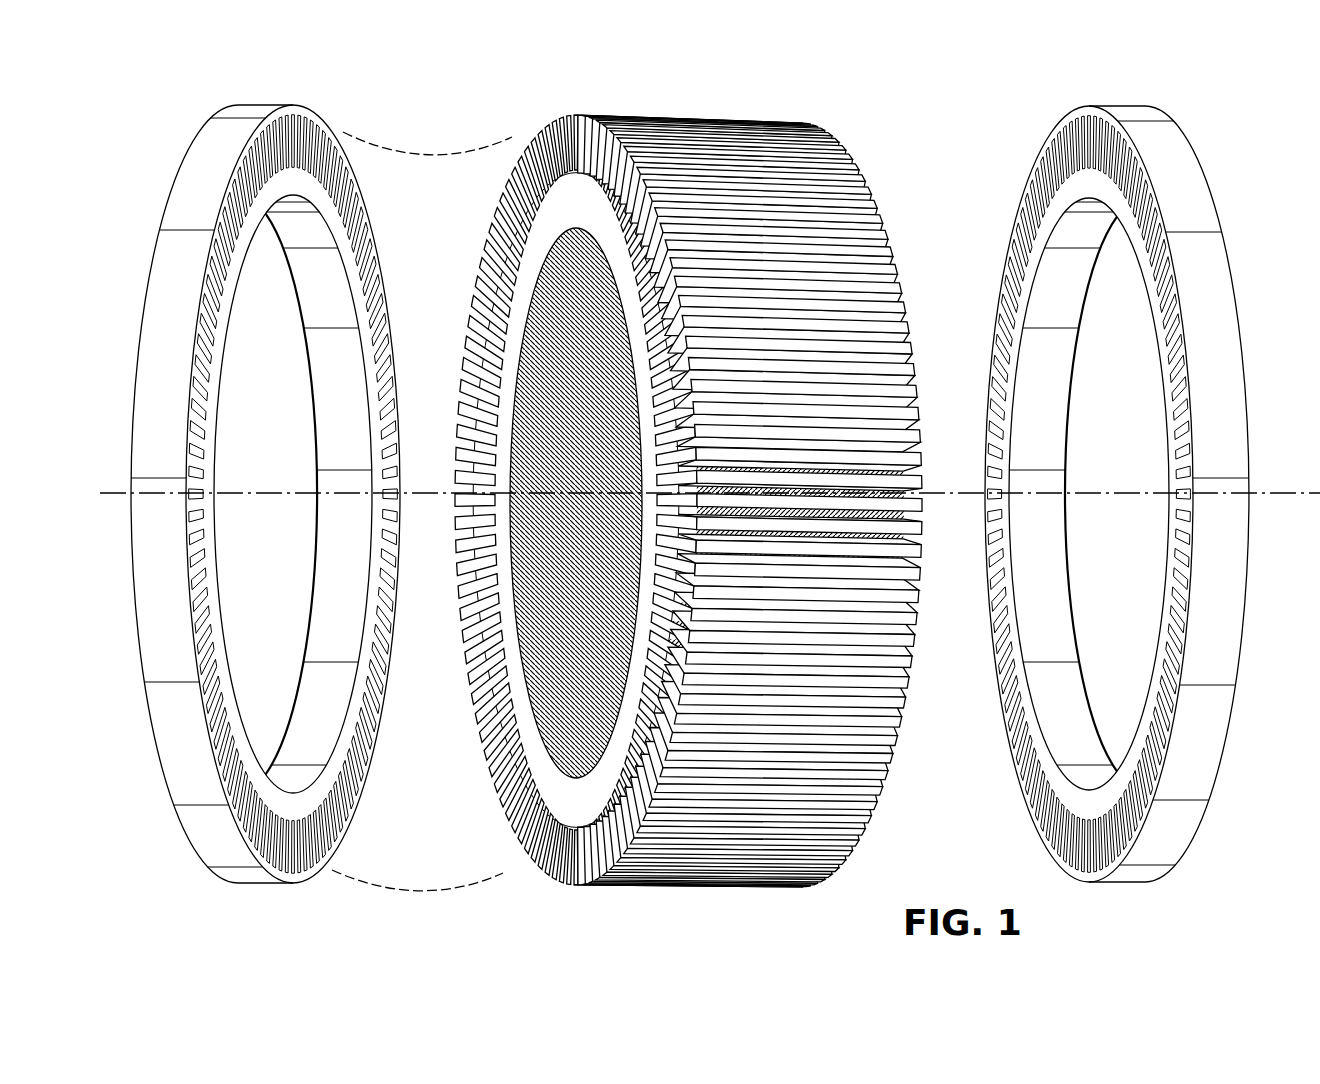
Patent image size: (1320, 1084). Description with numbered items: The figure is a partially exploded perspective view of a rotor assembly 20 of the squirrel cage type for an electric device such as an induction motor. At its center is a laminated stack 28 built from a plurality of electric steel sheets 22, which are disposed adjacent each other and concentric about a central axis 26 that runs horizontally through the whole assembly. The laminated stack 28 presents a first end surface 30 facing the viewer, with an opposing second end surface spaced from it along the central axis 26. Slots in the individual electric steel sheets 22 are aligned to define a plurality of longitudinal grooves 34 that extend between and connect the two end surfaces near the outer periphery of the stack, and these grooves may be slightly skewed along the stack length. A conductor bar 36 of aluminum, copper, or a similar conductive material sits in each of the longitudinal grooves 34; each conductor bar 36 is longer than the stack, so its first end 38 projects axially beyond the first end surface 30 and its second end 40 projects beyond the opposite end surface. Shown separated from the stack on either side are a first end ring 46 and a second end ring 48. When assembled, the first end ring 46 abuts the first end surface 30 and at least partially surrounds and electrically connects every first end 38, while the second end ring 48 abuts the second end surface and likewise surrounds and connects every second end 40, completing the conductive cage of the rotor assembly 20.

The rotor assembly 20 is at (1247, 122).
The electric steel sheets 22 is at (466, 351).
The central axis 26 is at (1130, 493).
The laminated stack 28 is at (750, 112).
The first end surface 30 is at (558, 213).
The longitudinal grooves 34 is at (643, 654).
The conductor bars 36 is at (889, 208).
The first end 38 is at (464, 632).
The second end 40 is at (923, 602).
The first end ring 46 is at (247, 108).
The second end ring 48 is at (1123, 107).